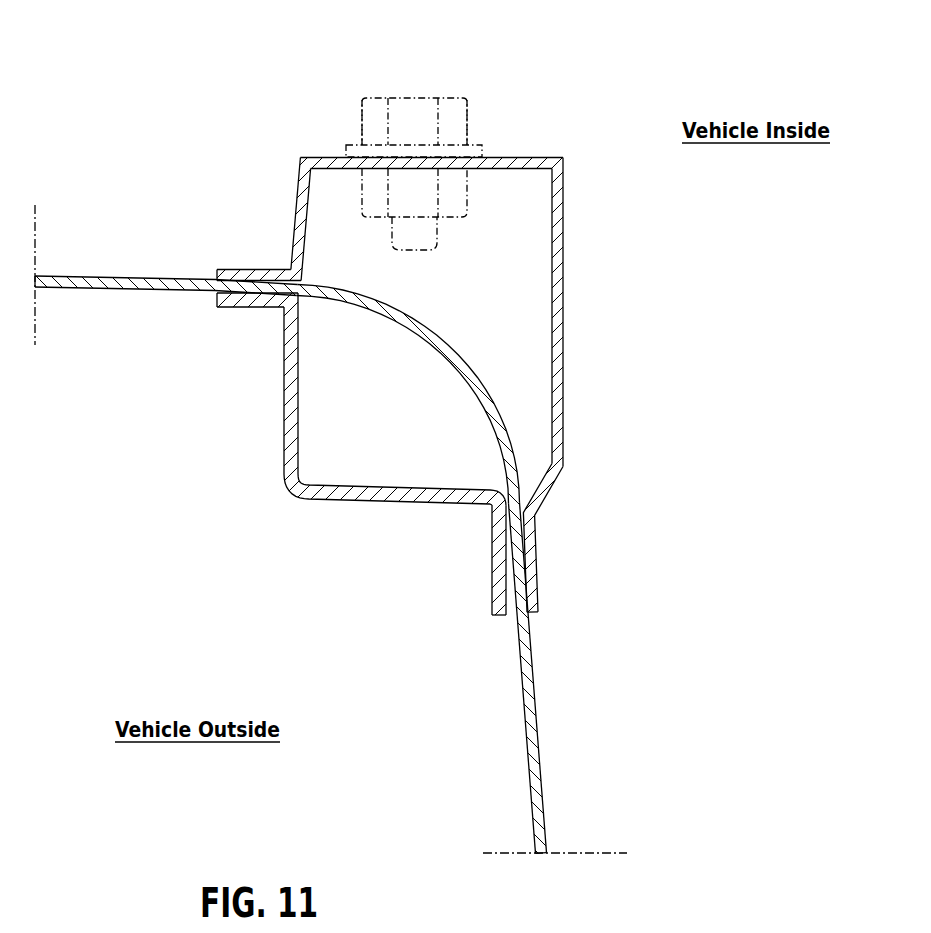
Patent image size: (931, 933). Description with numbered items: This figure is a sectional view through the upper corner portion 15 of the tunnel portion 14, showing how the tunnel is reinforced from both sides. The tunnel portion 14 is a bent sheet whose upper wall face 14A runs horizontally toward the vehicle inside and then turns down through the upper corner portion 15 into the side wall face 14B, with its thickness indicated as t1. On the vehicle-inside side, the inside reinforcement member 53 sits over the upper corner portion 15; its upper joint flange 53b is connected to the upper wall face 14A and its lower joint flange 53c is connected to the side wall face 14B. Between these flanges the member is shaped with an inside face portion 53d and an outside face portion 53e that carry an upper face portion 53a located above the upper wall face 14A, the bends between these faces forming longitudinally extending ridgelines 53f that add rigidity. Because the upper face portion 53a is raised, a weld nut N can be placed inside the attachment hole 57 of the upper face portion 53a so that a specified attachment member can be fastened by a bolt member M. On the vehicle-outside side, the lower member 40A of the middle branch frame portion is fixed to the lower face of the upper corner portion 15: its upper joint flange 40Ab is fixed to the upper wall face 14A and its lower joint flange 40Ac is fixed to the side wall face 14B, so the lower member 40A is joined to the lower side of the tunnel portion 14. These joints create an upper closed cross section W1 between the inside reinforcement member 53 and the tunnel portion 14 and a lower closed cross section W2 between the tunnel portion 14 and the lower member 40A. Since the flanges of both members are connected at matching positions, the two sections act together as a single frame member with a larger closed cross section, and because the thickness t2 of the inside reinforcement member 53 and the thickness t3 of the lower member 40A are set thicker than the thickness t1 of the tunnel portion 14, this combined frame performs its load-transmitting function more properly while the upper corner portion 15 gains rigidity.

The tunnel portion 14 is at (368, 491).
The upper wall face 14A is at (72, 276).
The side wall face 14B is at (540, 714).
The upper corner portion 15 is at (402, 312).
The lower member 40A is at (335, 461).
The upper joint flange 40Ab is at (233, 310).
The lower joint flange 40Ac is at (500, 578).
The inside reinforcement member 53 is at (418, 317).
The upper face portion 53a is at (502, 157).
The upper joint flange 53b is at (243, 270).
The lower joint flange 53c is at (538, 557).
The inside face portion 53d is at (298, 182).
The outside face portion 53e is at (563, 278).
The ridgelines 53f is at (300, 156).
The attachment hole 57 is at (428, 165).
The bolt member M is at (447, 92).
The weld nut N is at (467, 190).
The thickness of the tunnel portion t1 is at (127, 317).
The thickness of the inside reinforcement member t2 is at (528, 425).
The thickness of the lower member t3 is at (400, 520).
The upper closed cross section W1 is at (491, 309).
The lower closed cross section W2 is at (379, 431).